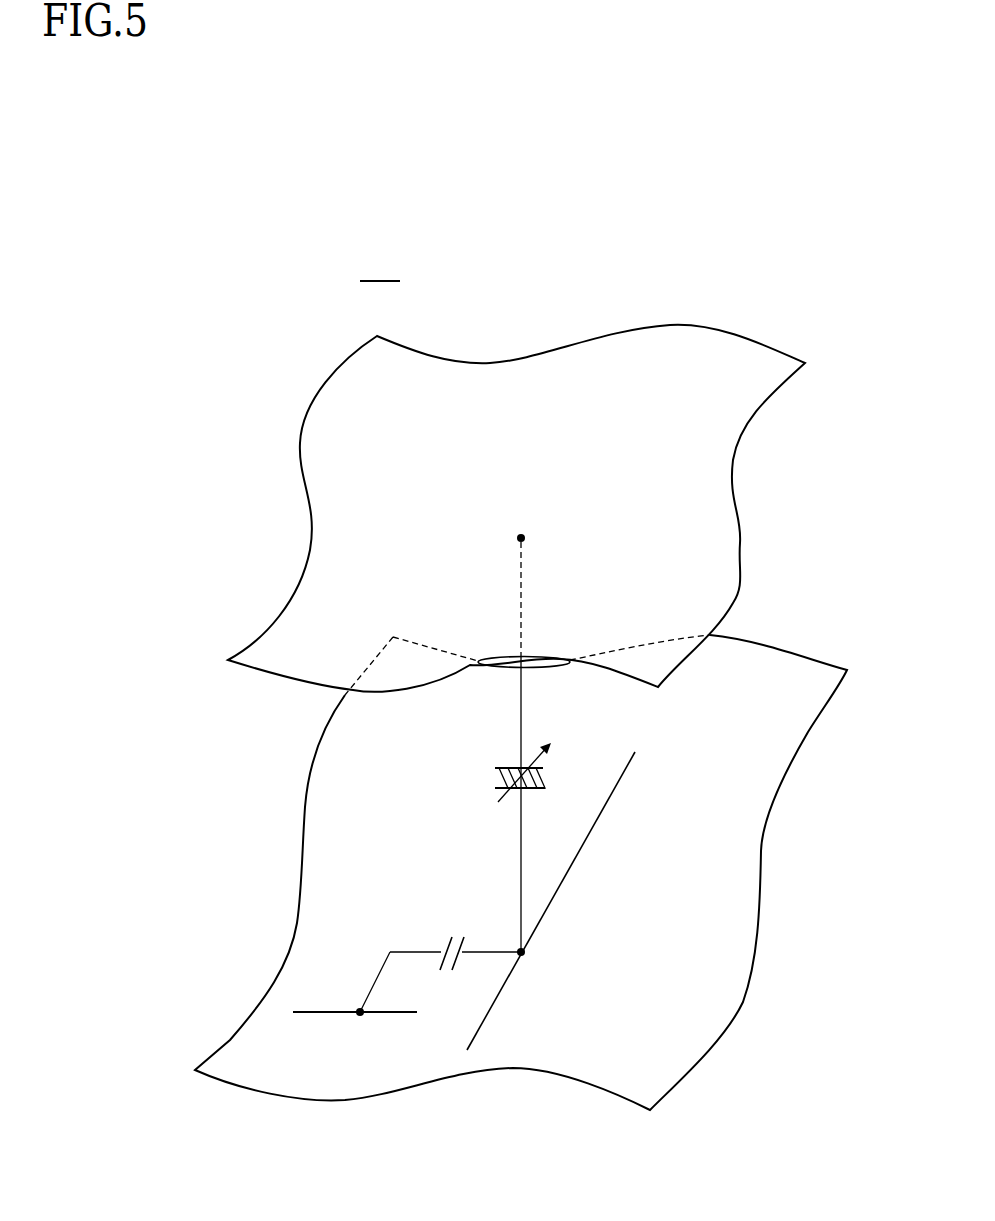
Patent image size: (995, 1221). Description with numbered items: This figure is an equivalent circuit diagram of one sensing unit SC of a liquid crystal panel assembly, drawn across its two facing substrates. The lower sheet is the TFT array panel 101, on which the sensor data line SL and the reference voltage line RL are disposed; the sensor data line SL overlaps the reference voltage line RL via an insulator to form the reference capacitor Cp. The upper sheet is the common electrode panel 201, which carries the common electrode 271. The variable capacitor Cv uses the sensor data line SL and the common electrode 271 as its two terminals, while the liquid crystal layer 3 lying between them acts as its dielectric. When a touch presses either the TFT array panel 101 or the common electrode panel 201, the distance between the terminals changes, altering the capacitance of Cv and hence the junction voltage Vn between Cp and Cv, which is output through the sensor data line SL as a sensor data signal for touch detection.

The liquid crystal layer 3 is at (217, 764).
The TFT array panel 101 is at (777, 845).
The common electrode panel 201 is at (538, 508).
The common electrode 271 is at (757, 533).